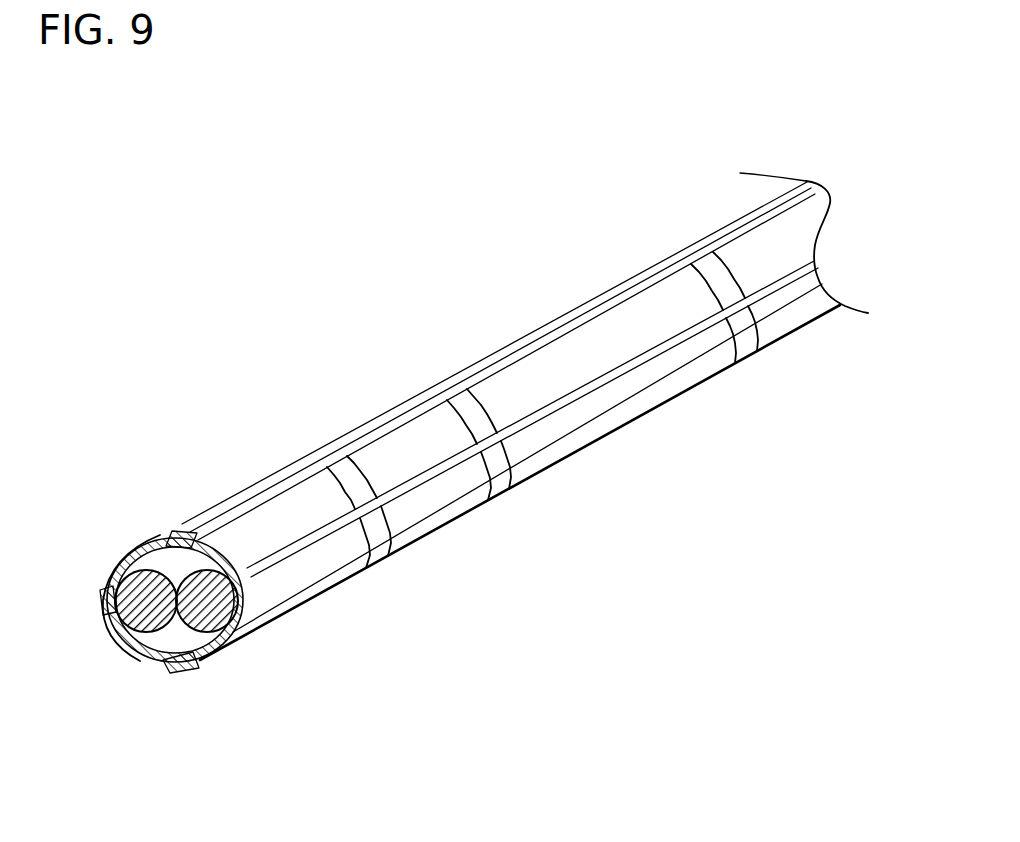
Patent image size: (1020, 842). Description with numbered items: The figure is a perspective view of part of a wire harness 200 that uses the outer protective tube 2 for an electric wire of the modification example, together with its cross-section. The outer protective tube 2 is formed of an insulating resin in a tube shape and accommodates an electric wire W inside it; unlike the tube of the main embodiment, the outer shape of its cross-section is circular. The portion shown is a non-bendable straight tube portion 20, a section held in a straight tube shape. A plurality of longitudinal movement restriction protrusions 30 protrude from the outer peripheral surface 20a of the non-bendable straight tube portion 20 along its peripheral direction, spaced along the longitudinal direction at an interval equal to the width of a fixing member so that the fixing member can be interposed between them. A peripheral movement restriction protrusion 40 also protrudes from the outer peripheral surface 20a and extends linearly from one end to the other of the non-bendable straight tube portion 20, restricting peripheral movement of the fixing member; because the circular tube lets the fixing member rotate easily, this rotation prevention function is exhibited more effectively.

The outer protective tube for an electric wire 2 is at (444, 229).
The non-bendable straight tube portion 20 is at (483, 343).
The outer peripheral surface 20a is at (631, 322).
The longitudinal movement restriction protrusion 30 is at (465, 398).
The peripheral movement restriction protrusion 40 is at (453, 477).
The wire harness 200 is at (222, 451).
The electric wire W is at (207, 625).